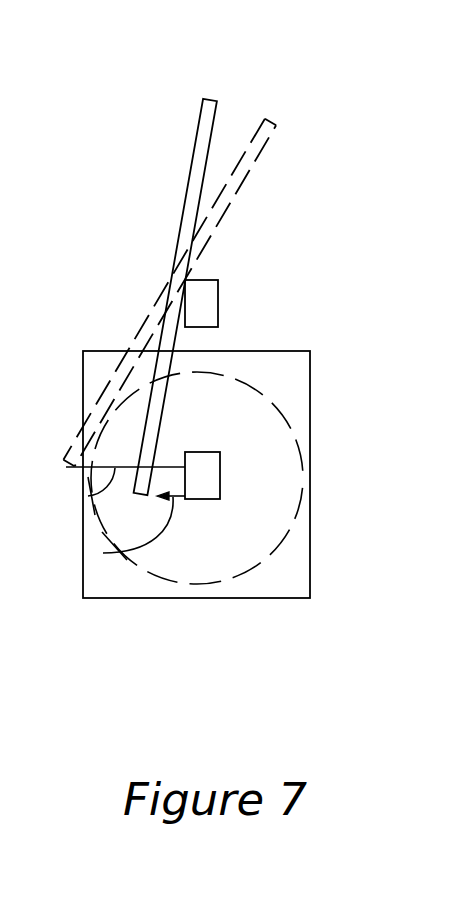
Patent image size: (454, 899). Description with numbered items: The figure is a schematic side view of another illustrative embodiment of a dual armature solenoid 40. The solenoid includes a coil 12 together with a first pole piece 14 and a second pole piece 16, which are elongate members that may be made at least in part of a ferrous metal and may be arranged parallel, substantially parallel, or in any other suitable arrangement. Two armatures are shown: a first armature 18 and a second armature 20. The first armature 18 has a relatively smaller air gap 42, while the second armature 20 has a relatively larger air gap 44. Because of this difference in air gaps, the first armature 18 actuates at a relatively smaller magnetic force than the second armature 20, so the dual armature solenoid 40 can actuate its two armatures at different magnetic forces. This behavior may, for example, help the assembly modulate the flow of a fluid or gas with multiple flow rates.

The dual armature solenoid 40 is at (332, 68).
The coil 12 is at (263, 395).
The first pole piece 14 is at (220, 475).
The second pole piece 16 is at (218, 303).
The first armature 18 is at (188, 195).
The second armature 20 is at (138, 333).
The air gap 42 is at (103, 553).
The air gap 44 is at (95, 500).